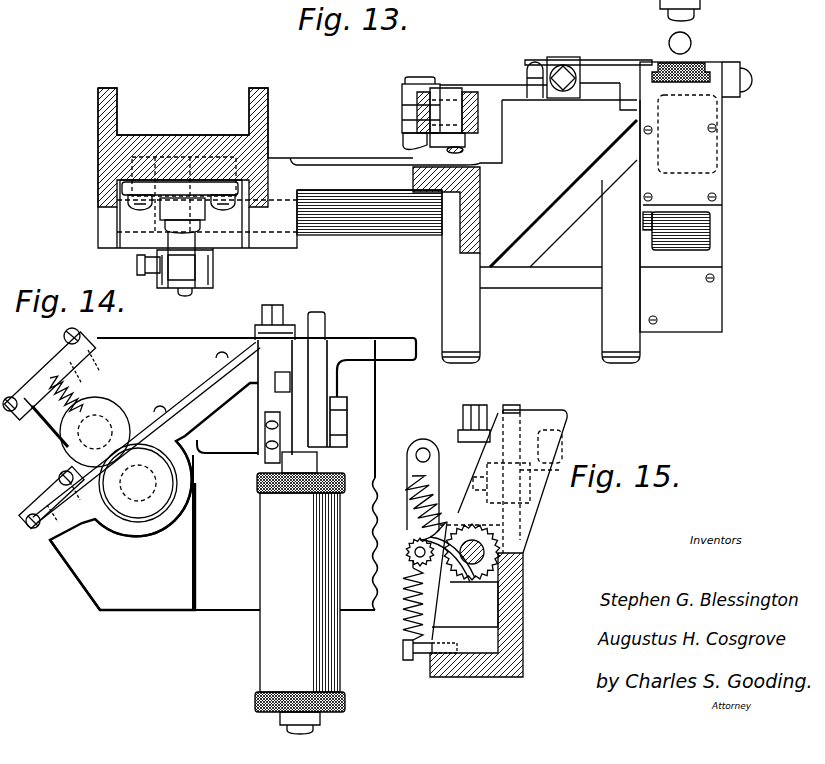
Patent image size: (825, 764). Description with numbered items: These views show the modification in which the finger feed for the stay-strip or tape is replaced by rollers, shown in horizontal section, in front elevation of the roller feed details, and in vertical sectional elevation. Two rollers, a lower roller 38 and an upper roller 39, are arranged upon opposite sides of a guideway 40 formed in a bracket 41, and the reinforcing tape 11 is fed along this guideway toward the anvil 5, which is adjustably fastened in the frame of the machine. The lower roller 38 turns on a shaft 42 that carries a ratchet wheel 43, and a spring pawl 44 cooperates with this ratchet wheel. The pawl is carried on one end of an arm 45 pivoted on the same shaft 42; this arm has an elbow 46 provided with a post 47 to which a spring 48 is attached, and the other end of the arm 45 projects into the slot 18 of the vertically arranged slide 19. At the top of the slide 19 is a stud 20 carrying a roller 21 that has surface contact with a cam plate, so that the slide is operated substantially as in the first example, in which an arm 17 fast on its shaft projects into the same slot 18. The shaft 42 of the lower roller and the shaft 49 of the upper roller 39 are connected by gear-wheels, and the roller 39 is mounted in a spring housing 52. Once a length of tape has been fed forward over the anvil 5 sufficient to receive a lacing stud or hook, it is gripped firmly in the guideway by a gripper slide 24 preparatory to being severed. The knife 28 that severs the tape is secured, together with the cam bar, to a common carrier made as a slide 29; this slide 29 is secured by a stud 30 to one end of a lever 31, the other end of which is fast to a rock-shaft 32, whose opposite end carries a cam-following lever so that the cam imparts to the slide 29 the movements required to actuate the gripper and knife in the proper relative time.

In FIG. 13, the anvil 5 is at (669, 43).
In FIG. 14, the anvil 5 is at (318, 466).
In FIG. 14, the reinforcing tape 11 is at (54, 575).
In FIG. 15, the arm 17 is at (476, 573).
In FIG. 15, the slot 18 is at (525, 585).
In FIG. 13, the slide 19 is at (200, 150).
In FIG. 15, the slide 19 is at (565, 455).
In FIG. 13, the stud 20 is at (183, 165).
In FIG. 15, the stud 20 is at (497, 412).
In FIG. 13, the roller 21 is at (165, 208).
In FIG. 15, the roller 21 is at (478, 410).
In FIG. 13, the gripper slide 24 is at (700, 64).
In FIG. 13, the knife 28 is at (594, 66).
In FIG. 13, the slide 29 is at (487, 85).
In FIG. 13, the stud 30 is at (419, 77).
In FIG. 13, the lever 31 is at (402, 116).
In FIG. 13, the rock-shaft 32 is at (460, 147).
In FIG. 13, the lower roller 38 is at (705, 222).
In FIG. 14, the lower roller 38 is at (115, 518).
In FIG. 14, the roller 39 is at (112, 410).
In FIG. 14, the guideway 40 is at (193, 393).
In FIG. 14, the bracket 41 is at (233, 474).
In FIG. 13, the shaft 42 is at (358, 232).
In FIG. 14, the shaft 42 is at (138, 502).
In FIG. 15, the shaft 42 is at (468, 570).
In FIG. 13, the ratchet wheel 43 is at (205, 226).
In FIG. 15, the ratchet wheel 43 is at (475, 540).
In FIG. 13, the spring pawl 44 is at (205, 276).
In FIG. 15, the spring pawl 44 is at (445, 532).
In FIG. 15, the arm 45 is at (408, 567).
In FIG. 13, the elbow 46 is at (180, 282).
In FIG. 15, the elbow 46 is at (410, 478).
In FIG. 13, the post 47 is at (137, 266).
In FIG. 15, the post 47 is at (424, 449).
In FIG. 15, the spring 48 is at (404, 619).
In FIG. 14, the shaft 49 is at (70, 432).
In FIG. 14, the spring housing 52 is at (45, 383).